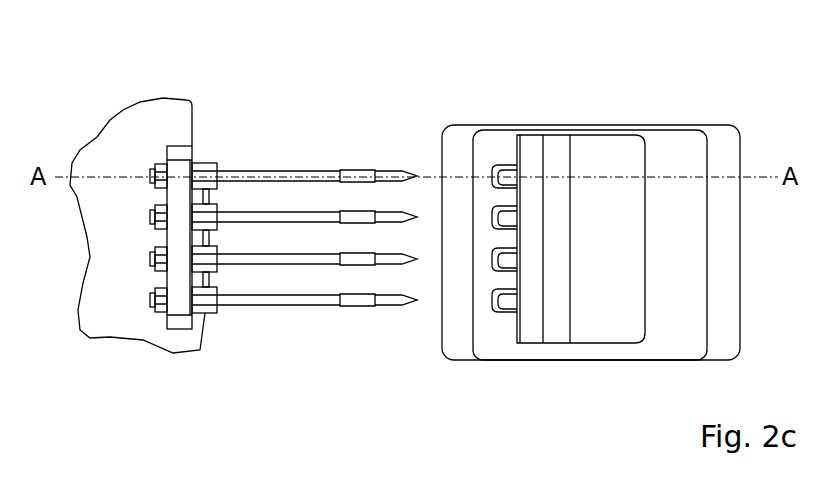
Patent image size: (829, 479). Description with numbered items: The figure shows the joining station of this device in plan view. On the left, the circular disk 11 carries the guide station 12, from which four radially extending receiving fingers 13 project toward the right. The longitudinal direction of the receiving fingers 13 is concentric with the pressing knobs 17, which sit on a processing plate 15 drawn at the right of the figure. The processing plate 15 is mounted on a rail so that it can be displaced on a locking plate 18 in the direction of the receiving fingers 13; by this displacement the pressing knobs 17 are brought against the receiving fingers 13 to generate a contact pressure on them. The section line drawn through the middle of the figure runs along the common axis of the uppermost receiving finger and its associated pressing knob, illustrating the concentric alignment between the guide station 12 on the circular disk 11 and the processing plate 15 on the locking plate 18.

The circular disk 11 is at (127, 160).
The guide station 12 is at (178, 173).
The receiving fingers 13 is at (292, 172).
The processing plate 15 is at (530, 160).
The pressing knobs 17 is at (510, 165).
The locking plate 18 is at (722, 153).